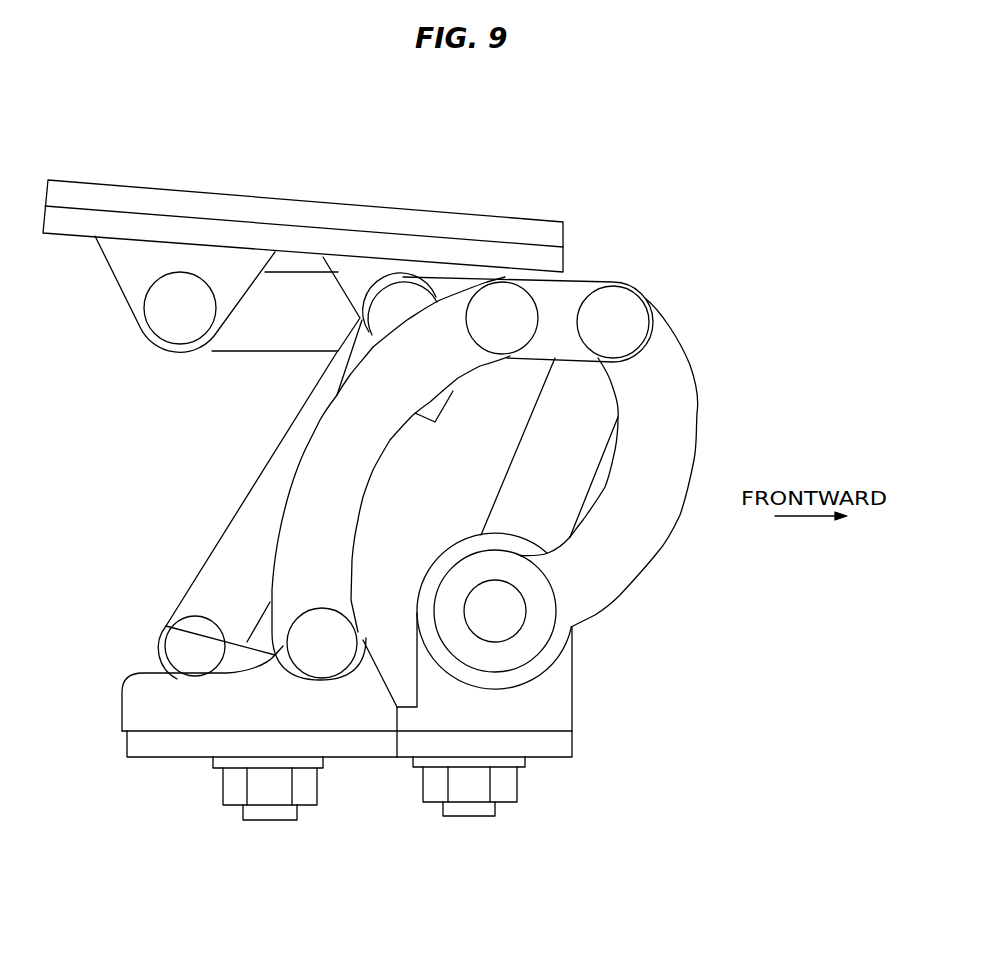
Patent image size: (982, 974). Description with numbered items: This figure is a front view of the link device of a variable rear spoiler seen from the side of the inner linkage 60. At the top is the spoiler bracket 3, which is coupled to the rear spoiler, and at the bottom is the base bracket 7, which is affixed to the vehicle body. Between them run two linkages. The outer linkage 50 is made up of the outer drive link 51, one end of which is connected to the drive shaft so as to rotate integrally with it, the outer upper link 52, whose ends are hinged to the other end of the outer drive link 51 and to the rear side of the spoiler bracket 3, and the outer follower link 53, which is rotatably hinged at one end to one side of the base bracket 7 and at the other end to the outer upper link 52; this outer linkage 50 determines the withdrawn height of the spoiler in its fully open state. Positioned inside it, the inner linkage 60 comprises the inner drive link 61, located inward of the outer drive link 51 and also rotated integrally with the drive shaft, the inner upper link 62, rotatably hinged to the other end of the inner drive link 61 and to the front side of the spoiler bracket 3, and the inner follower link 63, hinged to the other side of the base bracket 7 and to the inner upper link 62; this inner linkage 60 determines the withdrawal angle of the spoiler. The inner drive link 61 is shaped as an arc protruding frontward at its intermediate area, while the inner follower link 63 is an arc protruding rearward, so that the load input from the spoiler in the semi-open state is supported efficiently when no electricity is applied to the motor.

The spoiler bracket 3 is at (257, 210).
The base bracket 7 is at (357, 717).
The outer linkage 50 is at (226, 507).
The outer drive link 51 is at (600, 413).
The outer upper link 52 is at (277, 320).
The outer follower link 53 is at (233, 573).
The inner linkage 60 is at (637, 592).
The inner drive link 61 is at (652, 512).
The inner upper link 62 is at (568, 300).
The inner follower link 63 is at (303, 472).